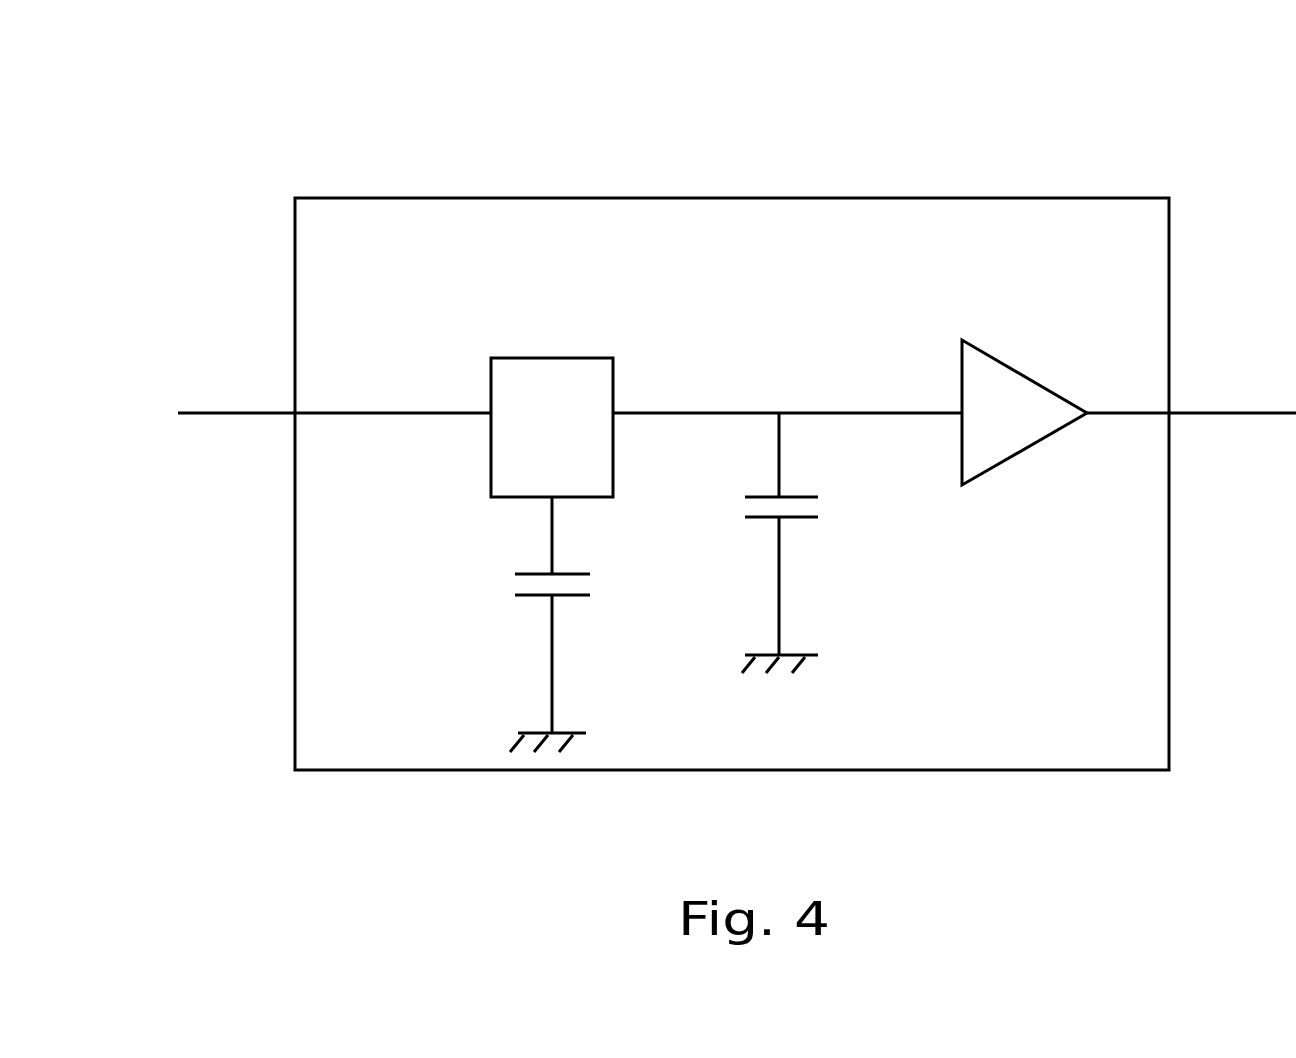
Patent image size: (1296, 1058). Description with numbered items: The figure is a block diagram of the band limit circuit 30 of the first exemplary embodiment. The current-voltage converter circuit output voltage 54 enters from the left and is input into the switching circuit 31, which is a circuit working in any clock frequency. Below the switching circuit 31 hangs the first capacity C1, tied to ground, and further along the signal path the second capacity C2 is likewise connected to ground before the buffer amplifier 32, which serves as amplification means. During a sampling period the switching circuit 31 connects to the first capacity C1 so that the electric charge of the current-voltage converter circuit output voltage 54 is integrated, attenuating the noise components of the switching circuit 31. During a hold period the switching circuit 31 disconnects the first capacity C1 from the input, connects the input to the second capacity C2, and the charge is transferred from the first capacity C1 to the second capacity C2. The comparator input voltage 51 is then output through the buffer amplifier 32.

The band limit circuit 30 is at (1098, 100).
The switching circuit 31 is at (548, 358).
The buffer amplifier 32 is at (1005, 365).
The comparator input voltage 51 is at (1272, 413).
The current-voltage converter circuit output voltage 54 is at (242, 418).
The first capacity C1 is at (510, 585).
The second capacity C2 is at (820, 508).